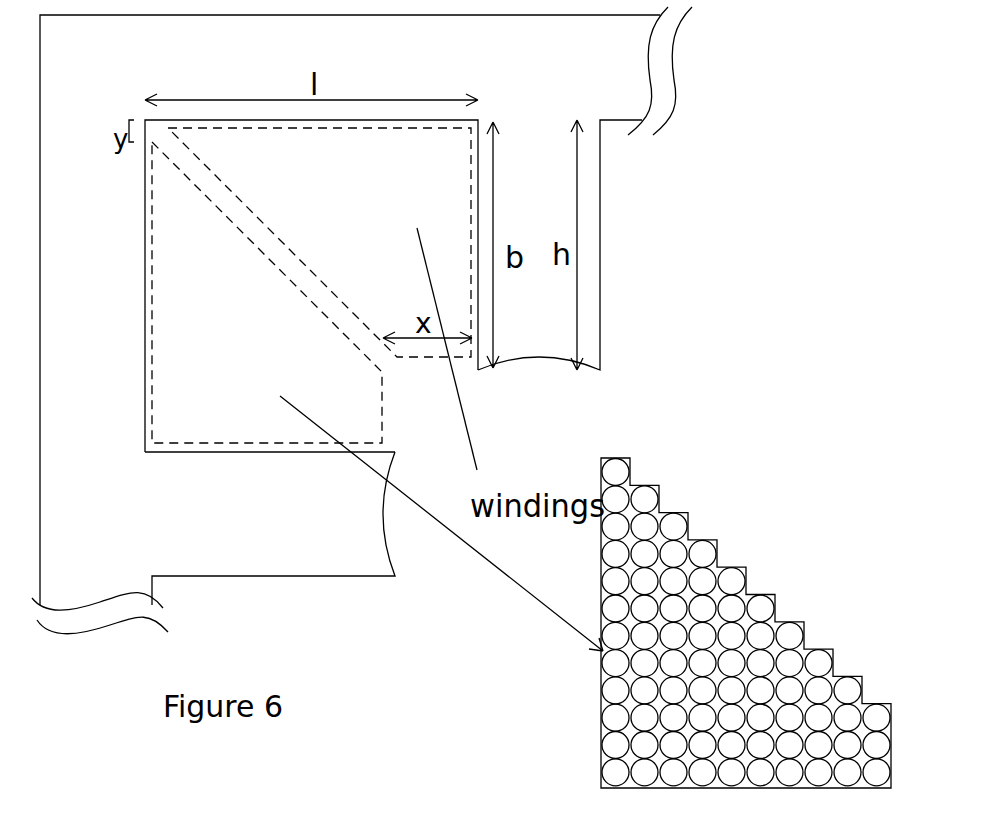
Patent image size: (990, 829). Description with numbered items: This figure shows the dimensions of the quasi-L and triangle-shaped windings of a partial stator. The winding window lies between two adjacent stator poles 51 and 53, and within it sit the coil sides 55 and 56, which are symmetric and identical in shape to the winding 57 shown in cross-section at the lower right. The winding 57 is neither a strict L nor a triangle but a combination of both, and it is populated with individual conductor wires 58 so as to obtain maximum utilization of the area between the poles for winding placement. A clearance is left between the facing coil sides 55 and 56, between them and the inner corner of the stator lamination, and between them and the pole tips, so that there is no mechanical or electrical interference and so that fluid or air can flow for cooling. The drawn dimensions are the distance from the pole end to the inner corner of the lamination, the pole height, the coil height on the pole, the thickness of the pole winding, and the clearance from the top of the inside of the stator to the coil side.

The pole 51 is at (600, 268).
The pole 53 is at (313, 577).
The coil side 55 is at (268, 228).
The coil side 56 is at (275, 267).
The winding 57 is at (887, 732).
The conductor wires 58 is at (776, 660).